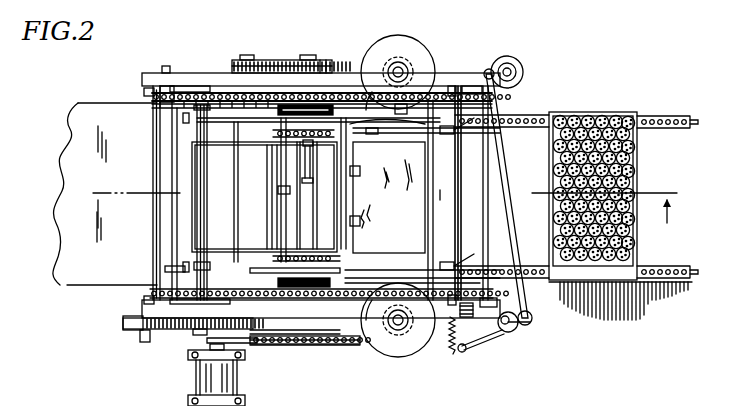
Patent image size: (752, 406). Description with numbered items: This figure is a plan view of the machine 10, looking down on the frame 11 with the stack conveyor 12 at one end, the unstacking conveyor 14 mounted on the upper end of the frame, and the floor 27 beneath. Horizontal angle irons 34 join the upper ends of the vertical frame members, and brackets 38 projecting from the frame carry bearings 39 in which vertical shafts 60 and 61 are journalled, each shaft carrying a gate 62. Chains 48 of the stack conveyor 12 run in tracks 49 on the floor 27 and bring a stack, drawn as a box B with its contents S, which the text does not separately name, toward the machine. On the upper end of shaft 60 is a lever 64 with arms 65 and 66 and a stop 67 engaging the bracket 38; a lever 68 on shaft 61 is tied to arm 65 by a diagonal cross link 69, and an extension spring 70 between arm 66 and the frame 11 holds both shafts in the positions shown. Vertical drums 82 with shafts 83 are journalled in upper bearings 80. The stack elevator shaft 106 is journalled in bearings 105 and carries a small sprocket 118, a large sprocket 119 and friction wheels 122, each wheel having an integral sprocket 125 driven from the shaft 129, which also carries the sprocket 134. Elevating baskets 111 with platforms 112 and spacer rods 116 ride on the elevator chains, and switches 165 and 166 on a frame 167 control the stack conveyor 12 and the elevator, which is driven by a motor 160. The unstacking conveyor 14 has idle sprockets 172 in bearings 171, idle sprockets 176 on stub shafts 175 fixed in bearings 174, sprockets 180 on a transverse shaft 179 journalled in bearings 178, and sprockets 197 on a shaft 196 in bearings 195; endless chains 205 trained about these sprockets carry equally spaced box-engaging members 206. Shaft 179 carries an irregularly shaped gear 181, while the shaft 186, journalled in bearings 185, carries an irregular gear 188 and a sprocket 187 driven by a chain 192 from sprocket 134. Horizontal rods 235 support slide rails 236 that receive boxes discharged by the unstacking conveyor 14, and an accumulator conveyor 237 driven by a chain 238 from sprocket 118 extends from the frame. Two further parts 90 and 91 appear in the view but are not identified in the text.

The machine 10 is at (556, 56).
The frame 11 is at (348, 70).
The stack conveyor 12 is at (534, 116).
The unstacking conveyor 14 is at (430, 90).
The floor 27 is at (610, 336).
The horizontal angle irons 34 is at (183, 76).
The brackets 38 is at (470, 318).
The bearings 39 is at (519, 70).
The chains 48 is at (676, 117).
The tracks 49 is at (694, 118).
The vertical shaft 60 is at (514, 330).
The vertical shaft 61 is at (511, 63).
The gate 62 is at (490, 303).
The lever 64 is at (505, 328).
The arm 65 is at (531, 323).
The arm 66 is at (466, 352).
The stop 67 is at (490, 337).
The lever 68 is at (507, 58).
The diagonal cross link 69 is at (505, 182).
The extension spring 70 is at (456, 345).
The upper bearings 80 is at (371, 90).
The vertical drums 82 is at (396, 40).
The shafts 83 is at (410, 88).
The post 90 is at (436, 168).
The bracket 91 is at (375, 114).
The bearings 105 is at (320, 86).
The transverse shaft 106 is at (281, 205).
The elevating baskets 111 is at (398, 213).
The platform 112 is at (412, 172).
The spacer rods 116 is at (360, 222).
The small sprocket 118 is at (318, 336).
The large sprocket 119 is at (290, 137).
The friction wheels 122 is at (280, 120).
The sprocket 125 is at (277, 109).
The shaft 129 is at (308, 55).
The sprocket 134 is at (326, 60).
The motor 160 is at (196, 378).
The switch 165 is at (280, 190).
The switch 166 is at (360, 172).
The frame 167 is at (300, 168).
The bearings 171 is at (398, 84).
The idle sprockets 172 is at (425, 86).
The bearings 174 is at (165, 80).
The stub shafts 175 is at (167, 66).
The idle sprockets 176 is at (147, 296).
The bearings 178 is at (198, 88).
The transverse shaft 179 is at (205, 184).
The sprockets 180 is at (198, 102).
The irregularly shaped gear 181 is at (192, 330).
The bearings 185 is at (331, 195).
The transverse shaft 186 is at (237, 262).
The sprocket 187 is at (243, 58).
The irregular gear 188 is at (287, 332).
The chain 192 is at (290, 60).
The bearings 195 is at (455, 84).
The transverse shaft 196 is at (452, 199).
The sprockets 197 is at (497, 96).
The endless chains 205 is at (403, 114).
The box-engaging members 206 is at (354, 198).
The horizontal rods 235 is at (183, 118).
The slide rails 236 is at (173, 132).
The accumulator conveyor 237 is at (80, 290).
The chain 238 is at (130, 330).
The box B is at (596, 112).
The spheres S is at (634, 114).